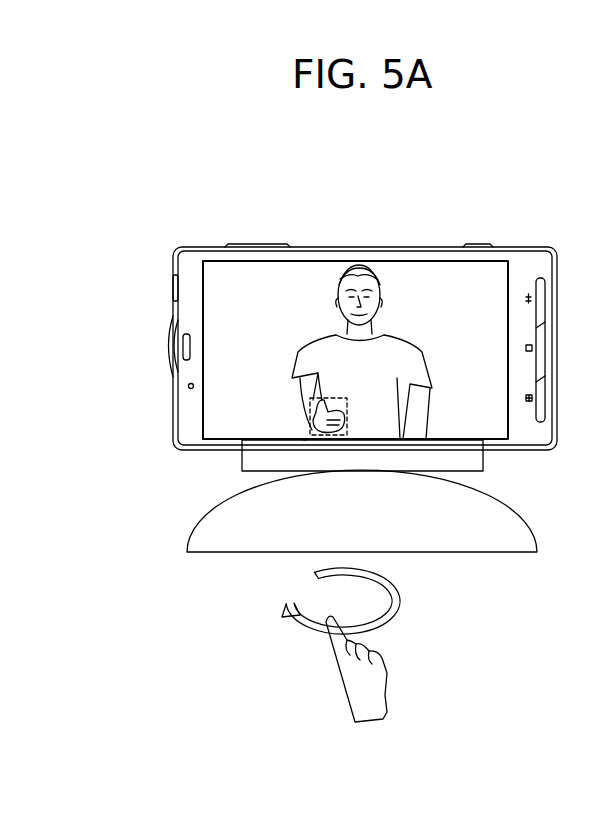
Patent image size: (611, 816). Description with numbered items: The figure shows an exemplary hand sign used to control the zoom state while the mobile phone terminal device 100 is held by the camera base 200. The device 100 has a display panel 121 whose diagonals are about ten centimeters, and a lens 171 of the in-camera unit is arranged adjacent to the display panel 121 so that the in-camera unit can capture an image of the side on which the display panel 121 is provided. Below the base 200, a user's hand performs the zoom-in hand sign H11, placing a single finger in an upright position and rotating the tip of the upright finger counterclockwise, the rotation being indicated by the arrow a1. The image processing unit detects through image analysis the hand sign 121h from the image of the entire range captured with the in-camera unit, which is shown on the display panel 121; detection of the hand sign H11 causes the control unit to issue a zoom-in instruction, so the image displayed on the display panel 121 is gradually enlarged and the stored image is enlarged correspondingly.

The mobile phone terminal device 100 is at (518, 451).
The display panel 121 is at (497, 267).
The hand sign 121h is at (310, 413).
The lens 171 is at (188, 386).
The camera base 200 is at (529, 527).
The rotation direction arrow a1 is at (400, 598).
The zoom-in hand sign H11 is at (388, 672).